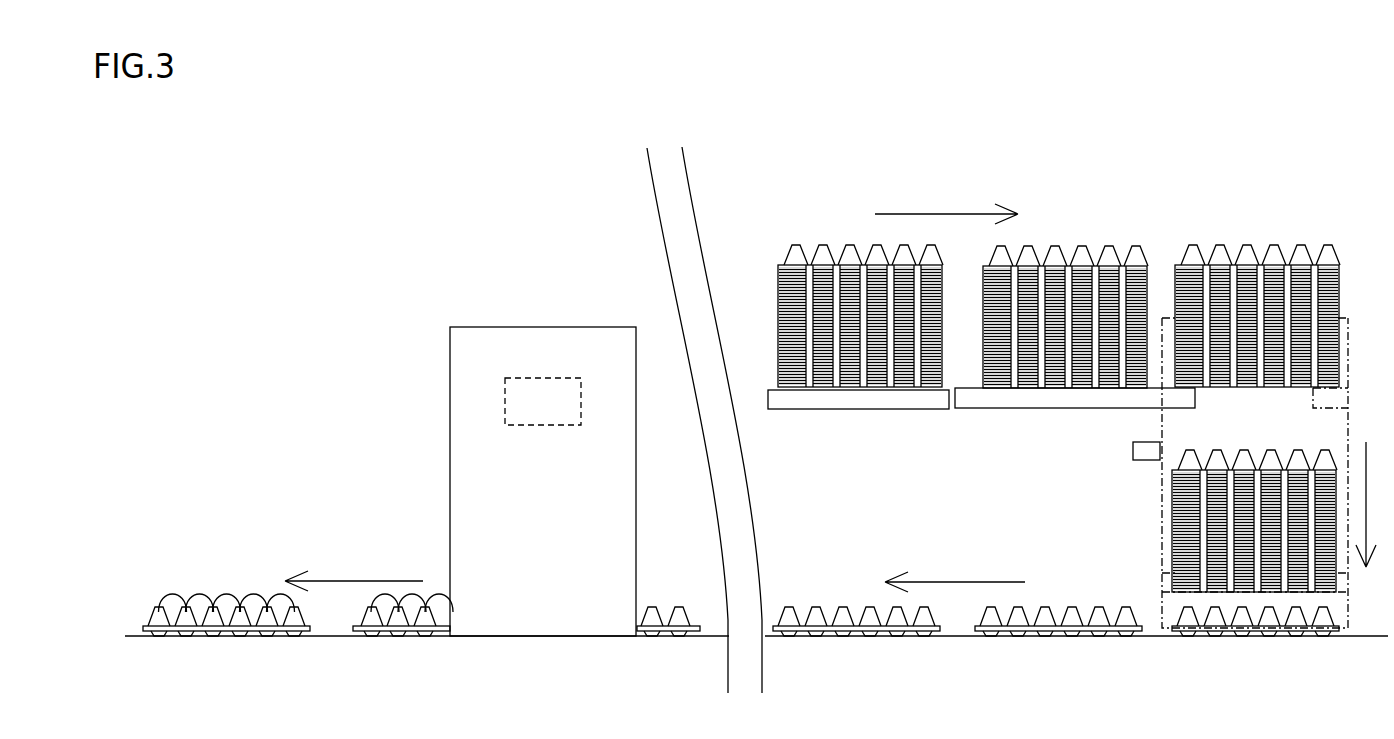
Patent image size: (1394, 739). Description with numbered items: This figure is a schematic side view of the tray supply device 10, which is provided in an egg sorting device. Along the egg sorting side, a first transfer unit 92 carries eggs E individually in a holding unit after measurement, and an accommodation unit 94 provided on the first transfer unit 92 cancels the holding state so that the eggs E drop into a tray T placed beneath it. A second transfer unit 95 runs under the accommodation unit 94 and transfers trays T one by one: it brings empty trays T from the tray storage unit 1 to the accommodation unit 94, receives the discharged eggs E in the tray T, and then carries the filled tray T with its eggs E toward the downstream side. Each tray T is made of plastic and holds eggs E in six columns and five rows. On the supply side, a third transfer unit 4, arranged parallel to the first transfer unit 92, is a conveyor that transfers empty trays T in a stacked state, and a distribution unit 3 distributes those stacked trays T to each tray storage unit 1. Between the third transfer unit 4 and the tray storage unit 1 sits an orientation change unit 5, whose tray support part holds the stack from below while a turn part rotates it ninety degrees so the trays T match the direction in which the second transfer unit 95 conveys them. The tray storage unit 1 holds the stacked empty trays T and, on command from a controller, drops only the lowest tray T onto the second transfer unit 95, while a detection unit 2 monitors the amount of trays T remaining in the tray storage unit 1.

The tray storage unit 1 is at (1160, 527).
The detection unit 2 is at (1133, 450).
The distribution unit 3 is at (784, 242).
The third transfer unit 4 is at (816, 410).
The orientation change unit 5 is at (1024, 398).
The tray supply device 10 is at (1161, 158).
The first transfer unit 92 is at (505, 400).
The accommodation unit 94 is at (450, 483).
The second transfer unit 95 is at (333, 638).
The tray T is at (190, 618).
The egg E is at (200, 592).